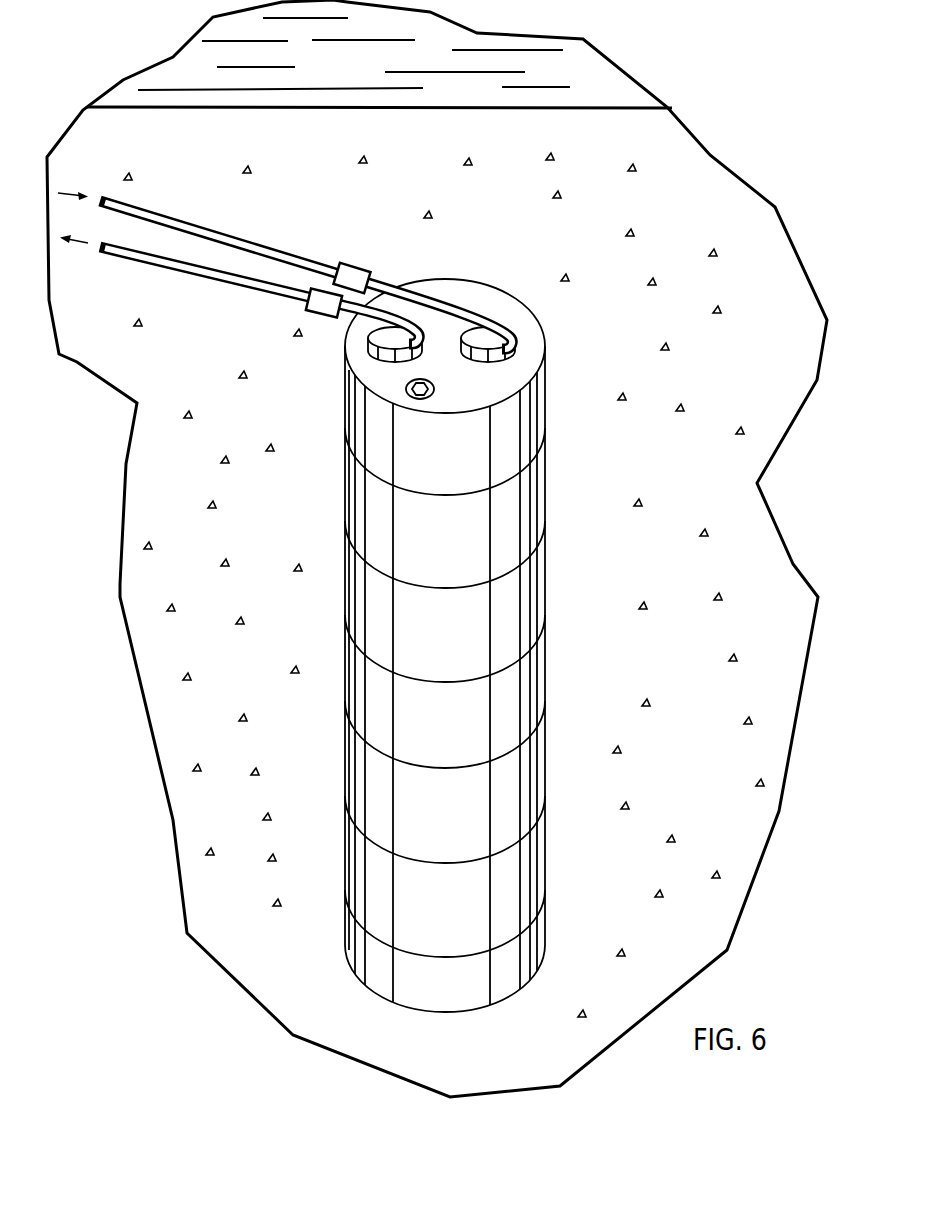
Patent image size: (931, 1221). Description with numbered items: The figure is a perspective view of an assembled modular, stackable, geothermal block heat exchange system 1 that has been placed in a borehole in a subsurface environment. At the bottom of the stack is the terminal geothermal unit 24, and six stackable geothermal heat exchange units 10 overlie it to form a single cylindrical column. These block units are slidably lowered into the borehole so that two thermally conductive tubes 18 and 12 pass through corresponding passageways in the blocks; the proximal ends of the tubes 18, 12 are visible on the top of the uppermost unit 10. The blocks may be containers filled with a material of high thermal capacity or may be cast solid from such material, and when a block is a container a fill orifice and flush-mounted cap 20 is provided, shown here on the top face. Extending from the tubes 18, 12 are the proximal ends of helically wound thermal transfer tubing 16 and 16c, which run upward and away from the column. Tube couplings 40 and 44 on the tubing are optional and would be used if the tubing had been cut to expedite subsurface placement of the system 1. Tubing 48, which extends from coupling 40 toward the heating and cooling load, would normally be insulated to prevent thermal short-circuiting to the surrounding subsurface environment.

The modular, stackable, geothermal block heat exchange system 1 is at (520, 251).
The stackable geothermal heat exchange unit 10 is at (545, 403).
The thermally conductive tube 12 is at (519, 351).
The helically wound thermal transfer tubing 16 is at (343, 322).
The helically wound thermal transfer tubing 16c is at (383, 281).
The thermally conductive tube 18 is at (368, 352).
The fill orifice and flush-mounted cap 20 is at (407, 390).
The terminal geothermal unit 24 is at (545, 923).
The tube coupling 40 is at (310, 315).
The tube coupling 44 is at (347, 264).
The tubing 48 is at (168, 272).